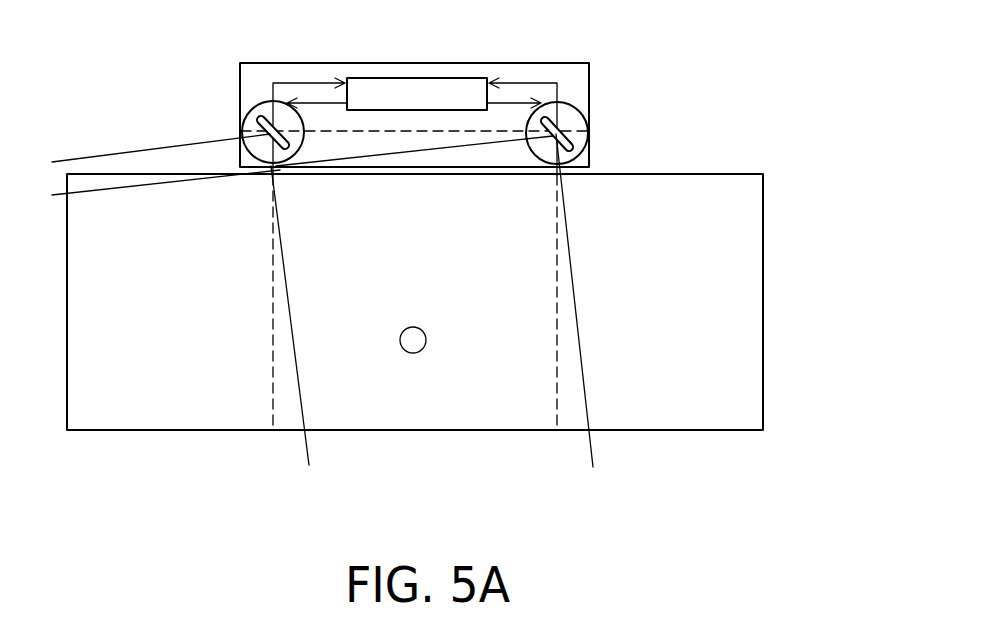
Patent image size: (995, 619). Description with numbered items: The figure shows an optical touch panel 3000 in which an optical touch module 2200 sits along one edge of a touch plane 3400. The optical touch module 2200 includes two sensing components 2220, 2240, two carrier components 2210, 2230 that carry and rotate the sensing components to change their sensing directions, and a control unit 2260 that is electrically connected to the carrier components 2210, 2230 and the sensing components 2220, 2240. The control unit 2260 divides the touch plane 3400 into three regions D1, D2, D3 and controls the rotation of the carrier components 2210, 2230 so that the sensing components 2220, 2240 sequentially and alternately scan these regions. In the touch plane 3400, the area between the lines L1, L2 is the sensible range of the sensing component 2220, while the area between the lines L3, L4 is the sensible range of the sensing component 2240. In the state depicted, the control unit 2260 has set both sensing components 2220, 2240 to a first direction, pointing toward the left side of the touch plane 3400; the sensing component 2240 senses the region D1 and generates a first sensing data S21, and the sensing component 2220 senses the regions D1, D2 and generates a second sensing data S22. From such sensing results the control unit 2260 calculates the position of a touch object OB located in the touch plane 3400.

The optical touch panel 3000 is at (450, 269).
The optical touch module 2200 is at (589, 87).
The carrier component 2210 is at (587, 146).
The sensing component 2220 is at (567, 134).
The carrier component 2230 is at (262, 101).
The sensing component 2240 is at (257, 118).
The control unit 2260 is at (443, 78).
The touch plane 3400 is at (763, 283).
The first sensing data S21 is at (311, 83).
The second sensing data S22 is at (519, 83).
The line L1 is at (575, 317).
The line L2 is at (100, 190).
The line L3 is at (293, 322).
The line L4 is at (100, 155).
The touch object OB is at (427, 340).
The region D1 is at (215, 302).
The region D2 is at (417, 389).
The region D3 is at (615, 302).